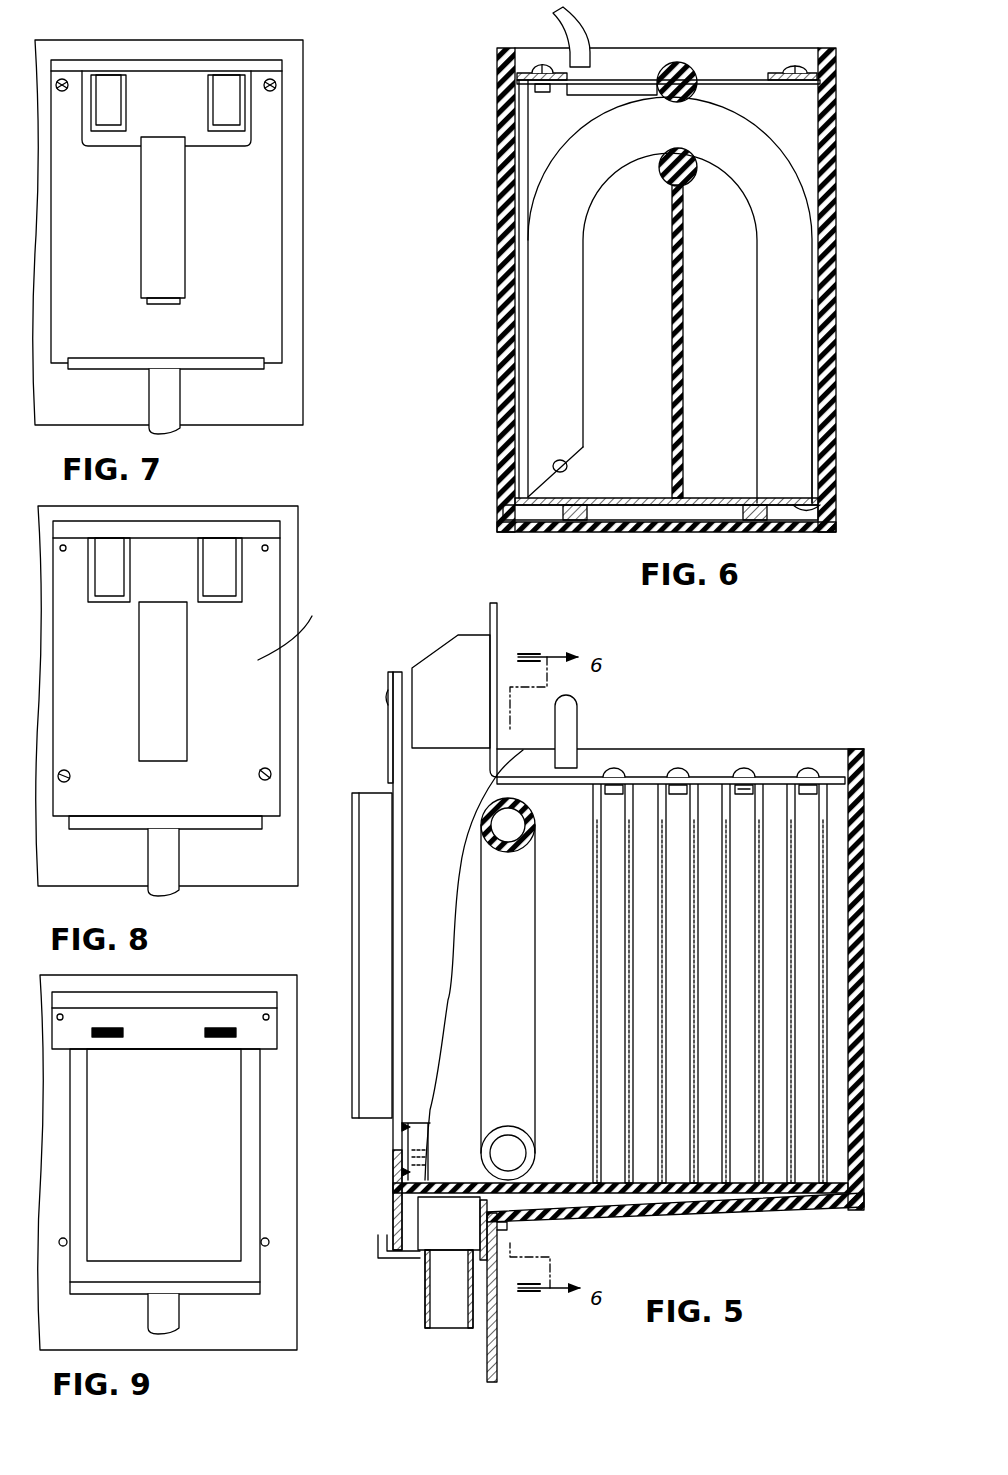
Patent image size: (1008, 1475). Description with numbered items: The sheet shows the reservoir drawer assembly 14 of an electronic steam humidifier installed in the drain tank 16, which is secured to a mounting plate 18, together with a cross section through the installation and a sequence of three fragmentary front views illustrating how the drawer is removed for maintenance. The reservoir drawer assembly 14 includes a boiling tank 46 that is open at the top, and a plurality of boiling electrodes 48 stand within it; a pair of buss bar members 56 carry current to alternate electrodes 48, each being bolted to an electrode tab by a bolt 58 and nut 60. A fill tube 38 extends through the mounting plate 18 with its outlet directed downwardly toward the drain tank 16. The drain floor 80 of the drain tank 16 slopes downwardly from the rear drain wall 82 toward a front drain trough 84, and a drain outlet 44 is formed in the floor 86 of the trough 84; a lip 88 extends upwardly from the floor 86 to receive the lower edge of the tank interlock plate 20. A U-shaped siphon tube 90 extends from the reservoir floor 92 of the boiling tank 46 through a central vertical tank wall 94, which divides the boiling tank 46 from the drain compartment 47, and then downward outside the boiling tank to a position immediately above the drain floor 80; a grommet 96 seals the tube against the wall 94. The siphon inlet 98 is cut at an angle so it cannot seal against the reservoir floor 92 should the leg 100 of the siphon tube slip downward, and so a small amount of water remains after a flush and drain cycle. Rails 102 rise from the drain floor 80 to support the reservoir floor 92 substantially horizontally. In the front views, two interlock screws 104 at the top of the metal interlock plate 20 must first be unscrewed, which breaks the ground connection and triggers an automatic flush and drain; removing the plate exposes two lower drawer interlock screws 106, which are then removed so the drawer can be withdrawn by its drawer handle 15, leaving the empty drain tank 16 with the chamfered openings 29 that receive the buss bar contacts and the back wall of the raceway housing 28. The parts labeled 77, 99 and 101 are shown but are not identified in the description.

In FIG. 8, the reservoir drawer assembly 14 is at (262, 658).
In FIG. 6, the reservoir drawer assembly 14 is at (510, 40).
In FIG. 5, the reservoir drawer assembly 14 is at (352, 960).
In FIG. 7, the drawer handle 15 is at (176, 243).
In FIG. 8, the drawer handle 15 is at (145, 689).
In FIG. 5, the drawer handle 15 is at (352, 808).
In FIG. 9, the drain tank 16 is at (225, 1188).
In FIG. 6, the drain tank 16 is at (838, 242).
In FIG. 7, the mounting plate 18 is at (300, 138).
In FIG. 8, the mounting plate 18 is at (292, 543).
In FIG. 9, the mounting plate 18 is at (285, 1053).
In FIG. 5, the mounting plate 18 is at (497, 618).
In FIG. 7, the tank interlock plate 20 is at (262, 178).
In FIG. 5, the tank interlock plate 20 is at (402, 1140).
In FIG. 9, the raceway housing 28 is at (172, 1043).
In FIG. 5, the raceway housing 28 is at (435, 658).
In FIG. 9, the chamfered openings 29 is at (112, 1040).
In FIG. 6, the fill tube 38 is at (583, 35).
In FIG. 5, the fill tube 38 is at (578, 718).
In FIG. 7, the drain outlet 44 is at (170, 395).
In FIG. 8, the drain outlet 44 is at (170, 857).
In FIG. 9, the drain outlet 44 is at (172, 1325).
In FIG. 5, the drain outlet 44 is at (435, 1312).
In FIG. 6, the boiling tank 46 is at (608, 325).
In FIG. 6, the drain compartment 47 is at (745, 338).
In FIG. 5, the boiling electrodes 48 is at (828, 855).
In FIG. 5, the buss bar members 56 is at (645, 777).
In FIG. 5, the bolt 58 is at (738, 782).
In FIG. 5, the nut 60 is at (750, 792).
In FIG. 8, the front panel 77 is at (248, 690).
In FIG. 5, the front panel 77 is at (400, 904).
In FIG. 6, the drain floor 80 is at (840, 530).
In FIG. 5, the drain floor 80 is at (655, 1205).
In FIG. 5, the rear drain wall 82 is at (860, 1122).
In FIG. 5, the front drain trough 84 is at (440, 1232).
In FIG. 5, the trough floor 86 is at (492, 1253).
In FIG. 7, the lip 88 is at (216, 358).
In FIG. 5, the lip 88 is at (378, 1240).
In FIG. 6, the U-shaped siphon tube 90 is at (725, 105).
In FIG. 5, the U-shaped siphon tube 90 is at (482, 820).
In FIG. 6, the reservoir floor 92 is at (596, 497).
In FIG. 5, the reservoir floor 92 is at (540, 1183).
In FIG. 6, the central vertical tank wall 94 is at (672, 385).
In FIG. 6, the grommet 96 is at (690, 66).
In FIG. 6, the siphon inlet 98 is at (555, 466).
In FIG. 6, the gasket 99 is at (840, 507).
In FIG. 6, the siphon tube leg 100 is at (548, 282).
In FIG. 6, the inner panel 101 is at (797, 372).
In FIG. 6, the rails 102 is at (578, 517).
In FIG. 7, the interlock screws 104 is at (63, 78).
In FIG. 5, the interlock screws 104 is at (384, 698).
In FIG. 8, the lower drawer interlock screws 106 is at (72, 782).
In FIG. 5, the lower drawer interlock screws 106 is at (402, 1160).